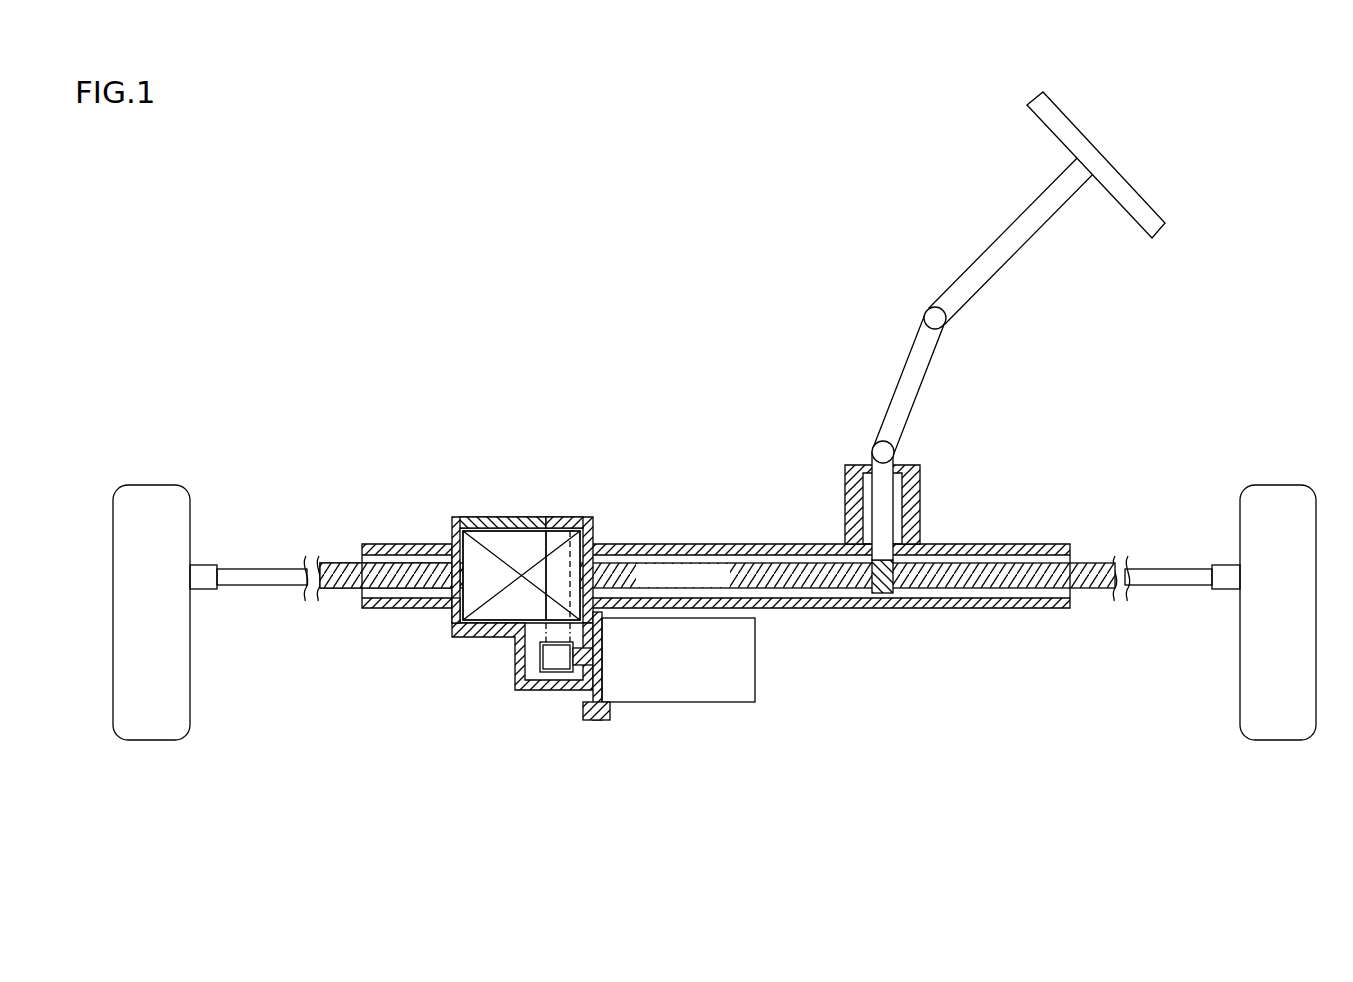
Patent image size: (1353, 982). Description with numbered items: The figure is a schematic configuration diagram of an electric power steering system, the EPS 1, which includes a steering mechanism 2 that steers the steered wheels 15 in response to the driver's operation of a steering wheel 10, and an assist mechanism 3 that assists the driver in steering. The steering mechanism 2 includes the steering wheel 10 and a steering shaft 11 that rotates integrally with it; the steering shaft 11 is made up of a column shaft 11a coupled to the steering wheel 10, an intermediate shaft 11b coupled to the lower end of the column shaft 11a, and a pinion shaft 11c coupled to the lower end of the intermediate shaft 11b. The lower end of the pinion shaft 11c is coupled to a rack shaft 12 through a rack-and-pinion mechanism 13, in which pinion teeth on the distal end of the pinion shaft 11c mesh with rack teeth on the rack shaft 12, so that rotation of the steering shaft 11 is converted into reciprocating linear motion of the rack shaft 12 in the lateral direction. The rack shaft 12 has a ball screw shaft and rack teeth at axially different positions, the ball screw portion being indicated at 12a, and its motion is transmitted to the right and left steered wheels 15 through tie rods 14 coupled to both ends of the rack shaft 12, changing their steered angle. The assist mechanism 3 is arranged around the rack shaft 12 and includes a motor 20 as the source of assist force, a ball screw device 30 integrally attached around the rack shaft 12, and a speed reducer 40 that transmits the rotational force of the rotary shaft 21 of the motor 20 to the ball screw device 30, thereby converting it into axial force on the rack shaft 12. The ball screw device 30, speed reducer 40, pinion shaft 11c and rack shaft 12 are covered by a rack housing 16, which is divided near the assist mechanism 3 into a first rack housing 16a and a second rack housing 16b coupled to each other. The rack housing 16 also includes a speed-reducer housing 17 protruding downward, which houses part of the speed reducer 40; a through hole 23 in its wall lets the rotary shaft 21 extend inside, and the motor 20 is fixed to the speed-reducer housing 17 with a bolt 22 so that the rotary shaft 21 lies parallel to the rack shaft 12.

The electric power steering system 1 is at (725, 223).
The steering mechanism 2 is at (986, 326).
The assist mechanism 3 is at (716, 602).
The steering wheel 10 is at (1075, 118).
The steering shaft 11 is at (952, 352).
The column shaft 11a is at (992, 237).
The intermediate shaft 11b is at (900, 375).
The pinion shaft 11c is at (857, 478).
The rack shaft 12 is at (717, 577).
The ball screw portion 12a is at (412, 573).
The rack-and-pinion mechanism 13 is at (883, 595).
The tie rod 14 is at (265, 590).
The steered wheel 15 is at (155, 484).
The rack housing 16 is at (530, 520).
The first rack housing 16a is at (513, 520).
The second rack housing 16b is at (571, 541).
The speed-reducer housing 17 is at (515, 688).
The motor 20 is at (677, 705).
The rotary shaft 21 is at (585, 668).
The bolt 22 is at (612, 712).
The through hole 23 is at (598, 645).
The ball screw device 30 is at (457, 610).
The speed reducer 40 is at (538, 630).